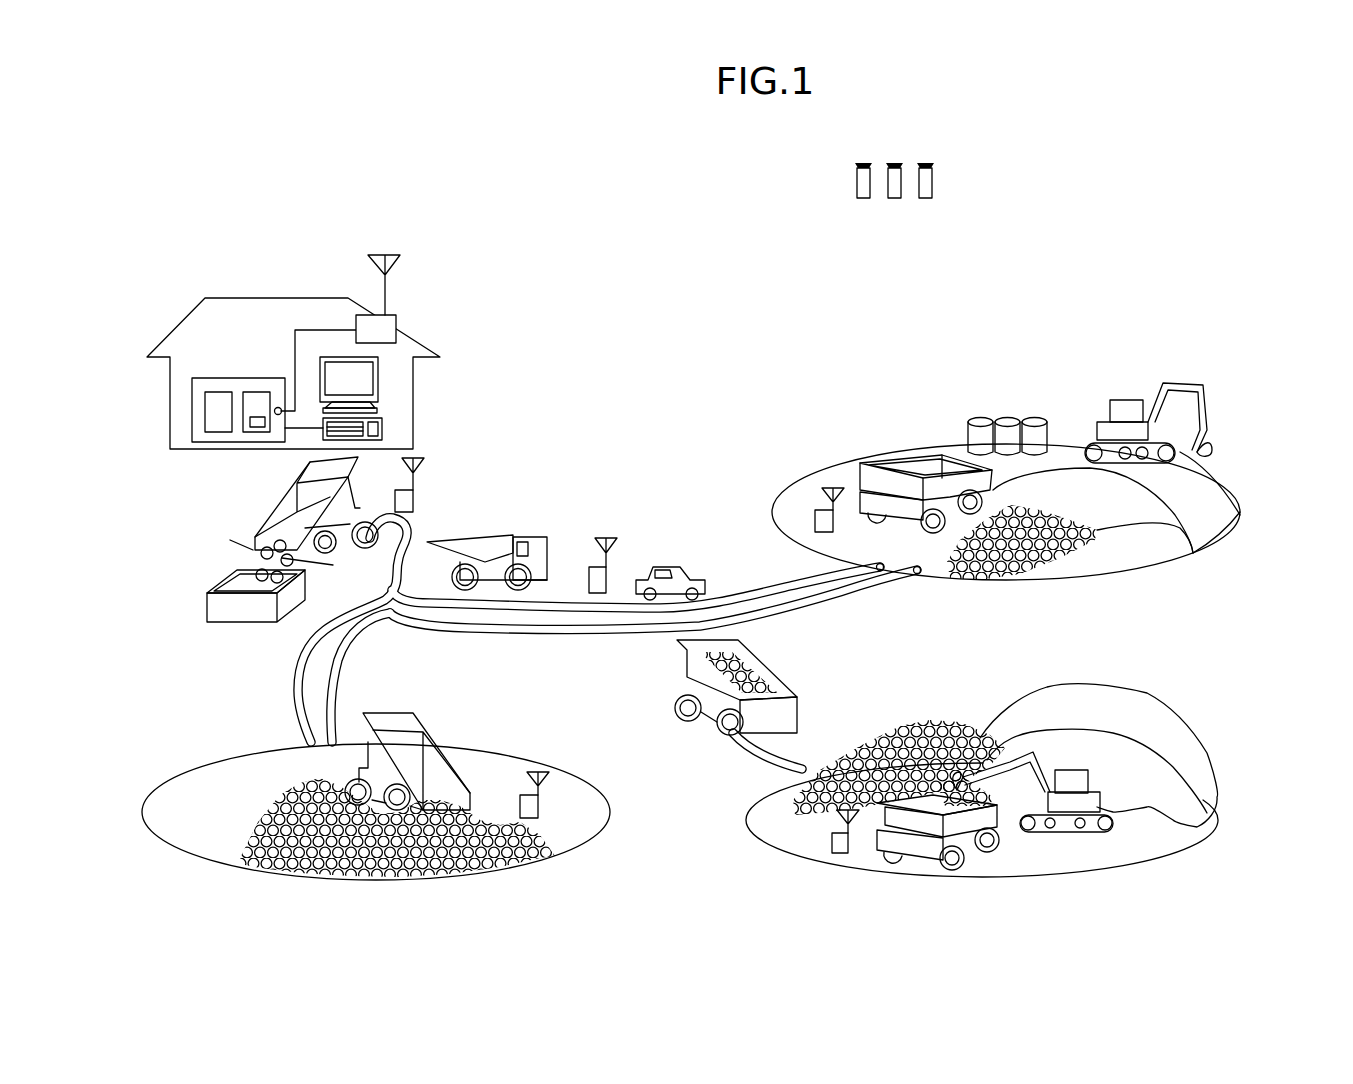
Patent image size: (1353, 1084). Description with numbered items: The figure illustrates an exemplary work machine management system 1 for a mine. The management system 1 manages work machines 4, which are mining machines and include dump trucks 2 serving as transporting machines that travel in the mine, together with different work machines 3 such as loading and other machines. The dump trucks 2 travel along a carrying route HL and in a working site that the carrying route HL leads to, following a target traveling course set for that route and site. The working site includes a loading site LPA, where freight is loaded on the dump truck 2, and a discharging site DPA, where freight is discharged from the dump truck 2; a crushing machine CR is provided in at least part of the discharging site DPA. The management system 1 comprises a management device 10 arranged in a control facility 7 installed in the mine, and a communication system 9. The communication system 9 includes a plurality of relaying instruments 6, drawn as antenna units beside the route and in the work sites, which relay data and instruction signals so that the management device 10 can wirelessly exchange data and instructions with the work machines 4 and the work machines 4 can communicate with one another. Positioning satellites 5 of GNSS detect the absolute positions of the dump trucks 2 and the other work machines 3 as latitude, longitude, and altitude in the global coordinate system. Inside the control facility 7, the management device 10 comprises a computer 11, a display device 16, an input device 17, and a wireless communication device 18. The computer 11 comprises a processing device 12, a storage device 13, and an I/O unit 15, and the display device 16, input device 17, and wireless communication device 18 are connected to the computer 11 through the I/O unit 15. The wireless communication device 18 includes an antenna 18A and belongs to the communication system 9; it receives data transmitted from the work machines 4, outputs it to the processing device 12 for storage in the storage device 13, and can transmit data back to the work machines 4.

The work machine management system 1 is at (1041, 254).
The dump truck 2 is at (295, 487).
The work machine 3 is at (672, 566).
The work machine 4 is at (714, 626).
The positioning satellite 5 is at (863, 200).
The relaying instrument 6 is at (418, 478).
The control facility 7 is at (295, 299).
The communication system 9 is at (552, 294).
The management device 10 is at (263, 316).
The computer 11 is at (236, 379).
The processing device 12 is at (219, 392).
The storage device 13 is at (258, 392).
The I/O unit 15 is at (278, 407).
The display device 16 is at (378, 378).
The input device 17 is at (382, 430).
The wireless communication device 18 is at (370, 315).
The antenna 18A is at (387, 253).
The carrying route HL is at (538, 624).
The crushing machine CR is at (243, 614).
The discharging site DPA is at (190, 598).
The loading site LPA is at (1236, 454).